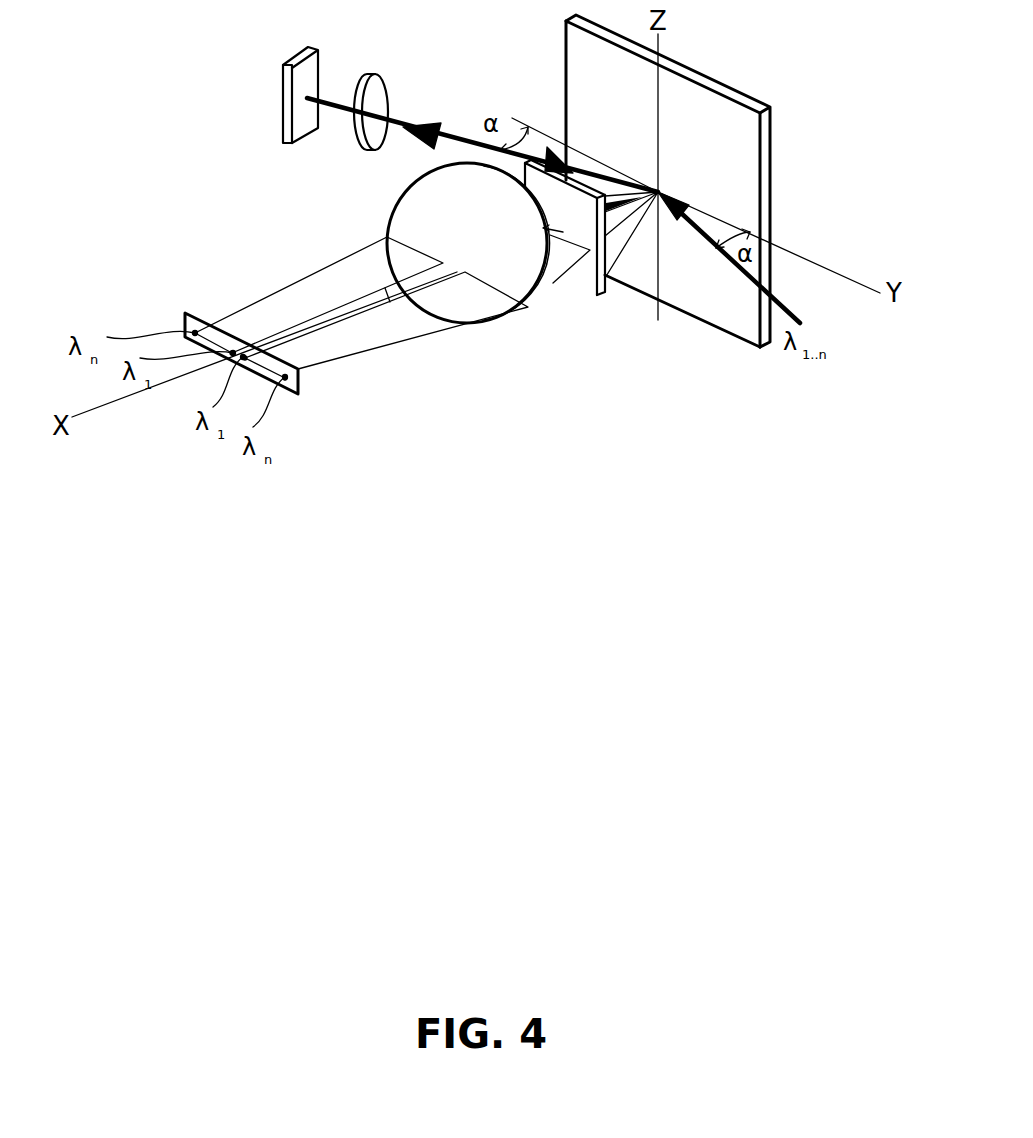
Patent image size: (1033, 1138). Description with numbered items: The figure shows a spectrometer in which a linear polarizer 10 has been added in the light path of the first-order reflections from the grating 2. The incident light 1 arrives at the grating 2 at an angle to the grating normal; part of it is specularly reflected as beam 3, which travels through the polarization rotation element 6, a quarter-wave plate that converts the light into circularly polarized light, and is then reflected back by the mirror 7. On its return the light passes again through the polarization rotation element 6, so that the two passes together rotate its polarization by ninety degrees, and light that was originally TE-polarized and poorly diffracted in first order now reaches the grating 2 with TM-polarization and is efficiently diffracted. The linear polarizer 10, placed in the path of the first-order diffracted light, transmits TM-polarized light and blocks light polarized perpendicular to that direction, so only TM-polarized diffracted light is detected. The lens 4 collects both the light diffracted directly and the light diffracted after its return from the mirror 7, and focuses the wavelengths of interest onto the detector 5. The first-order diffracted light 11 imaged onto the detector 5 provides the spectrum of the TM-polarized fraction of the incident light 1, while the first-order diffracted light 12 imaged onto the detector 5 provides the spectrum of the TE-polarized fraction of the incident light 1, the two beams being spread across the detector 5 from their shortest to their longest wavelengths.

The incident light 1 is at (800, 320).
The grating 2 is at (770, 113).
The specularly reflected beam 3 is at (462, 143).
The lens 4 is at (520, 316).
The detector 5 is at (300, 393).
The polarization rotation element 6 is at (365, 145).
The mirror 7 is at (287, 138).
The linear polarizer 10 is at (595, 285).
The first-order diffracted light 11 is at (368, 347).
The first-order diffracted light 12 is at (303, 288).